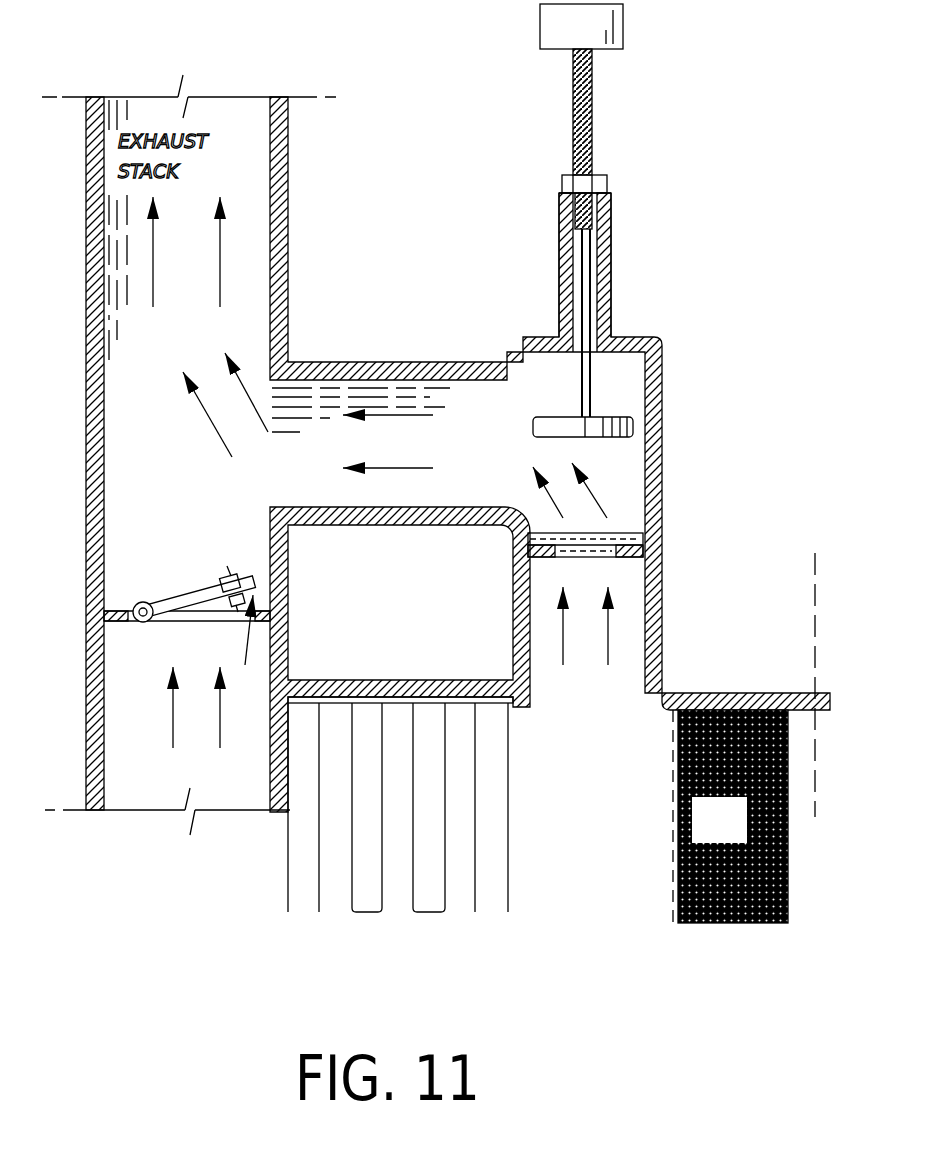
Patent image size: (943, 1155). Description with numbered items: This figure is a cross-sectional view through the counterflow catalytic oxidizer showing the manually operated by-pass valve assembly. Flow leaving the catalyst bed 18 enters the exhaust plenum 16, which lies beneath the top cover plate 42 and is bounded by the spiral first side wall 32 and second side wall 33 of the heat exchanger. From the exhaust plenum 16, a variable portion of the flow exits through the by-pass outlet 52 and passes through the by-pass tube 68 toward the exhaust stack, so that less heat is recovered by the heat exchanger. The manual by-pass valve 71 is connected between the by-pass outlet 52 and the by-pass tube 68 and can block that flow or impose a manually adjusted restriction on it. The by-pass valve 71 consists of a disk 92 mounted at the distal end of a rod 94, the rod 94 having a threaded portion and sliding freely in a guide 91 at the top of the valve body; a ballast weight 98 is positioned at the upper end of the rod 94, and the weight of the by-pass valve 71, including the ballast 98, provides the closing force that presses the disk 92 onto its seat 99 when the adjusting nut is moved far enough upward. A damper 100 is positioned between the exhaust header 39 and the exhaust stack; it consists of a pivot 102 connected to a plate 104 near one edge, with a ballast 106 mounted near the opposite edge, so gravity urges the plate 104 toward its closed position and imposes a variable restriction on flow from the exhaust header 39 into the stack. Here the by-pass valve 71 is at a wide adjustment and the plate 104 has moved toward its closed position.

The ballast weight 98 is at (590, 42).
The rod 94 is at (593, 105).
The manual by-pass valve 71 is at (608, 147).
The guide 91 is at (611, 250).
The disk 92 is at (613, 417).
The seat 99 is at (662, 523).
The by-pass tube 68 is at (420, 455).
The damper 100 is at (187, 592).
The ballast 106 is at (224, 562).
The plate 104 is at (203, 607).
The pivot 102 is at (143, 624).
The exhaust header 39 is at (207, 786).
The top cover plate 42 is at (402, 683).
The by-pass outlet 52 is at (600, 727).
The exhaust plenum 16 is at (603, 805).
The first side wall 32 is at (475, 850).
The second side wall 33 is at (508, 887).
The catalyst bed 18 is at (740, 835).